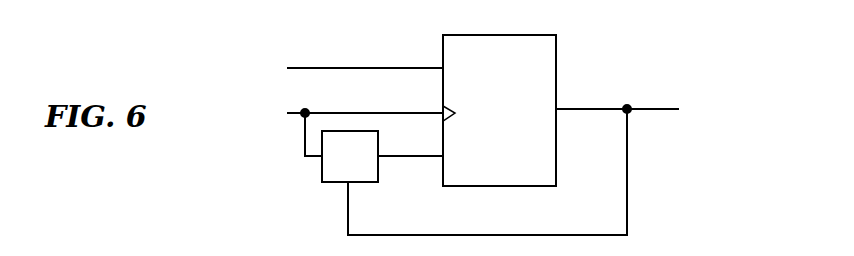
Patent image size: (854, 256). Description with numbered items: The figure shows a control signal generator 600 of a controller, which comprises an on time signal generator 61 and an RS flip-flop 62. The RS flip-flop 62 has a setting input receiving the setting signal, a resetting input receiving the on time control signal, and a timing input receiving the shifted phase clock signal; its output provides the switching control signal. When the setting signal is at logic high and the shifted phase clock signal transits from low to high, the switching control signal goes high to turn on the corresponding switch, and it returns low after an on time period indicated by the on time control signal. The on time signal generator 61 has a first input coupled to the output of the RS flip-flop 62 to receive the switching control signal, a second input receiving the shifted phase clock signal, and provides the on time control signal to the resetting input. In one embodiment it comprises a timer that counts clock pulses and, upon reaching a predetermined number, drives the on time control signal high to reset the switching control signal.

The control signal generator 600 is at (638, 61).
The on time signal generator 61 is at (375, 182).
The RS flip-flop 62 is at (556, 155).